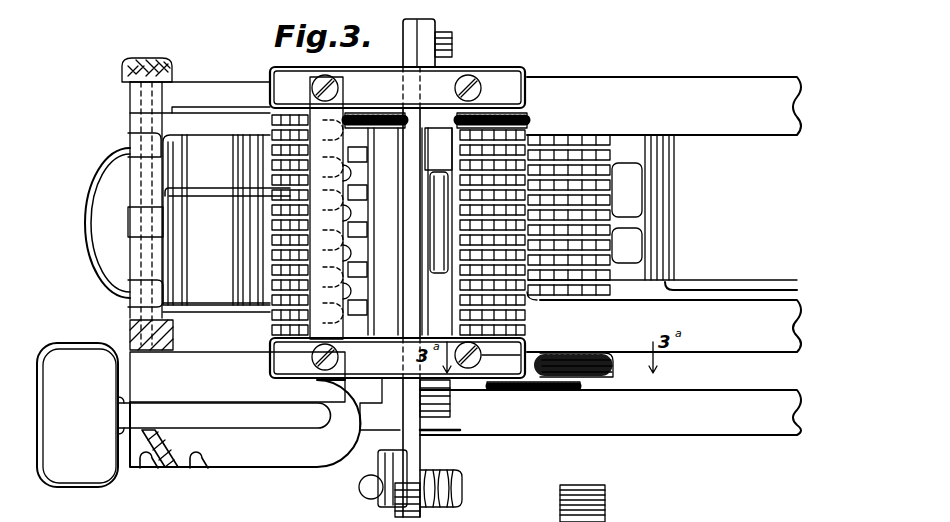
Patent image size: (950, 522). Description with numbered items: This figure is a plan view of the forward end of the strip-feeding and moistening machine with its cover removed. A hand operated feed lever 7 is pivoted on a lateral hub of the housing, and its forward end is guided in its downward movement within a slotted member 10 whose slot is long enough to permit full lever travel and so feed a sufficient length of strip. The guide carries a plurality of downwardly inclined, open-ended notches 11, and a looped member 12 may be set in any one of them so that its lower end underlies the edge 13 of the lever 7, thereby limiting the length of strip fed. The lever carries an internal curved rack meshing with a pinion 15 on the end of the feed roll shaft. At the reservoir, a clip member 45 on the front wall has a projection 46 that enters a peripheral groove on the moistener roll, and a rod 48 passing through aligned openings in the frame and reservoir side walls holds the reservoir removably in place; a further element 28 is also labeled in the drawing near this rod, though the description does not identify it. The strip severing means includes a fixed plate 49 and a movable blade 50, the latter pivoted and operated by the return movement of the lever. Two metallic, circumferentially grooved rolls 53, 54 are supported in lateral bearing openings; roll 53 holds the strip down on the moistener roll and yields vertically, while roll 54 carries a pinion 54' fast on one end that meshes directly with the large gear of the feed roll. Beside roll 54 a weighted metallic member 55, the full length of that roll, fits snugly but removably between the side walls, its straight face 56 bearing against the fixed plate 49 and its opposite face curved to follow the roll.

The feed lever 7 is at (653, 425).
The slotted member 10 is at (290, 457).
The open-ended notches 11 is at (155, 468).
The looped member 12 is at (168, 467).
The edge of the lever 13 is at (273, 415).
The pinion 15 is at (534, 386).
The lower tab 28 is at (175, 283).
The clip member 45 is at (148, 190).
The projection 46 is at (182, 200).
The rod 48 is at (140, 105).
The fixed plate 49 is at (413, 403).
The movable blade 50 is at (398, 228).
The roll 53 is at (280, 143).
The roll 54 is at (514, 223).
The pinion 54' is at (540, 87).
The metallic member 55 is at (428, 172).
The face of the member 56 is at (403, 312).